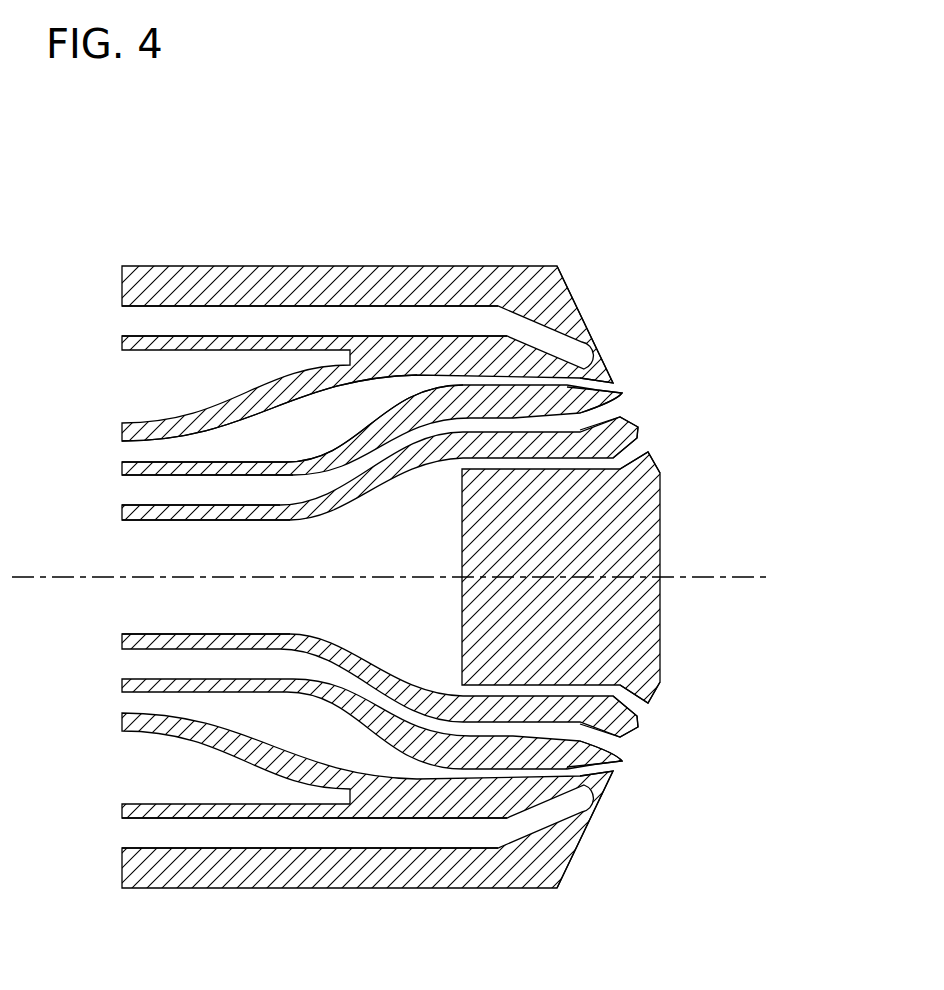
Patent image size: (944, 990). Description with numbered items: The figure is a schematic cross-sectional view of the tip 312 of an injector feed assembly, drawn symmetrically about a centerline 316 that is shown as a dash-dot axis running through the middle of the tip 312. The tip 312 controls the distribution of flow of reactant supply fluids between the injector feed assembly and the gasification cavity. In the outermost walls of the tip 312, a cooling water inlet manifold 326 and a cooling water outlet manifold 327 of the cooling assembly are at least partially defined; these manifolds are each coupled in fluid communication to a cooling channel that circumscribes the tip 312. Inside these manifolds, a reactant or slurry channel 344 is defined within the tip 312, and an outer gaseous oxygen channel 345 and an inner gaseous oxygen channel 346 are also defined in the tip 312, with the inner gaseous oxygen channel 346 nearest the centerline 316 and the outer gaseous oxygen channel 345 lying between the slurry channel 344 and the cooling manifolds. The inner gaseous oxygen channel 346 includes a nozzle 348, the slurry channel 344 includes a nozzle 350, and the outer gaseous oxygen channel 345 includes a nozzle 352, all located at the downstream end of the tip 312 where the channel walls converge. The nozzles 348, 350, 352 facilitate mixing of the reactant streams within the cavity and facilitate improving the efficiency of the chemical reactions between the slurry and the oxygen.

The tip 312 is at (178, 230).
The centerline 316 is at (60, 578).
The cooling water inlet manifold 326 is at (228, 845).
The cooling water outlet manifold 327 is at (345, 331).
The slurry channel 344 is at (253, 504).
The outer GOX channel 345 is at (297, 447).
The inner GOX channel 346 is at (213, 556).
The nozzle 348 is at (647, 442).
The nozzle 350 is at (636, 410).
The nozzle 352 is at (628, 390).